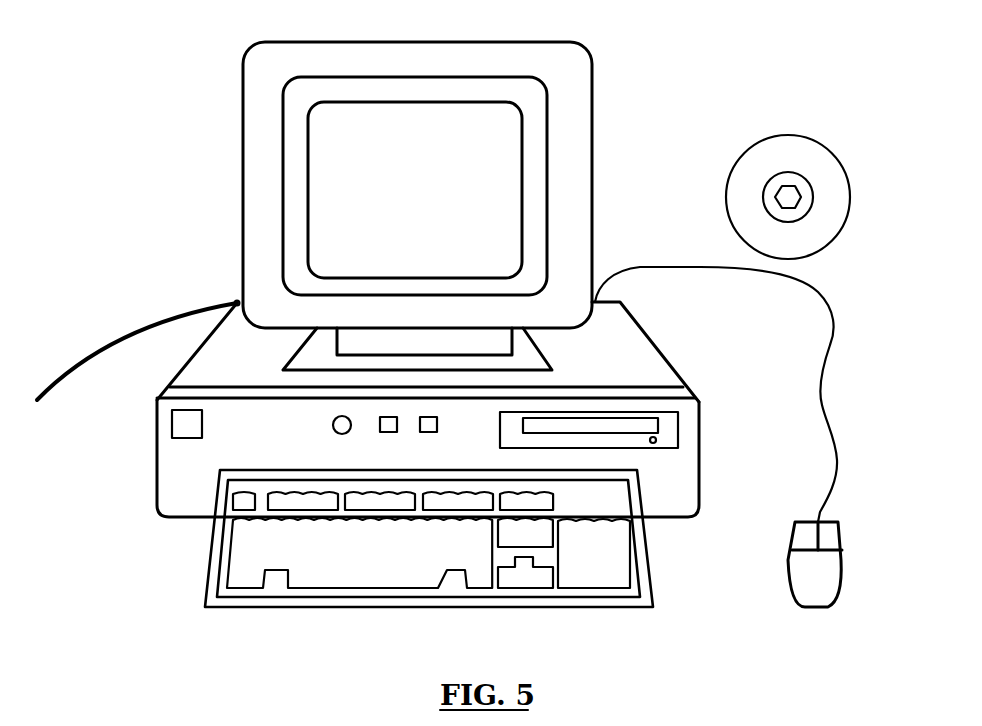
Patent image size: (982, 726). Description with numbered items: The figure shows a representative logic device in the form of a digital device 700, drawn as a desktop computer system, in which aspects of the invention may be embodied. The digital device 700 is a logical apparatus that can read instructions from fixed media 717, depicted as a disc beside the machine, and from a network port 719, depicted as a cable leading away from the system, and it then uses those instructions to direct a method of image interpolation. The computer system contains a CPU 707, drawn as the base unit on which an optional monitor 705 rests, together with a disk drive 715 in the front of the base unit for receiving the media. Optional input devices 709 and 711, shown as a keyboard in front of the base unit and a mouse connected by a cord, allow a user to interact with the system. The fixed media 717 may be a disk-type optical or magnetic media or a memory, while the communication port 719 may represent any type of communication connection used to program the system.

The digital device 700 is at (748, 62).
The monitor 705 is at (495, 157).
The CPU 707 is at (643, 357).
The input device 709 is at (300, 608).
The input device 711 is at (820, 583).
The disk drive 715 is at (680, 430).
The fixed media 717 is at (817, 140).
The network port 719 is at (88, 348).